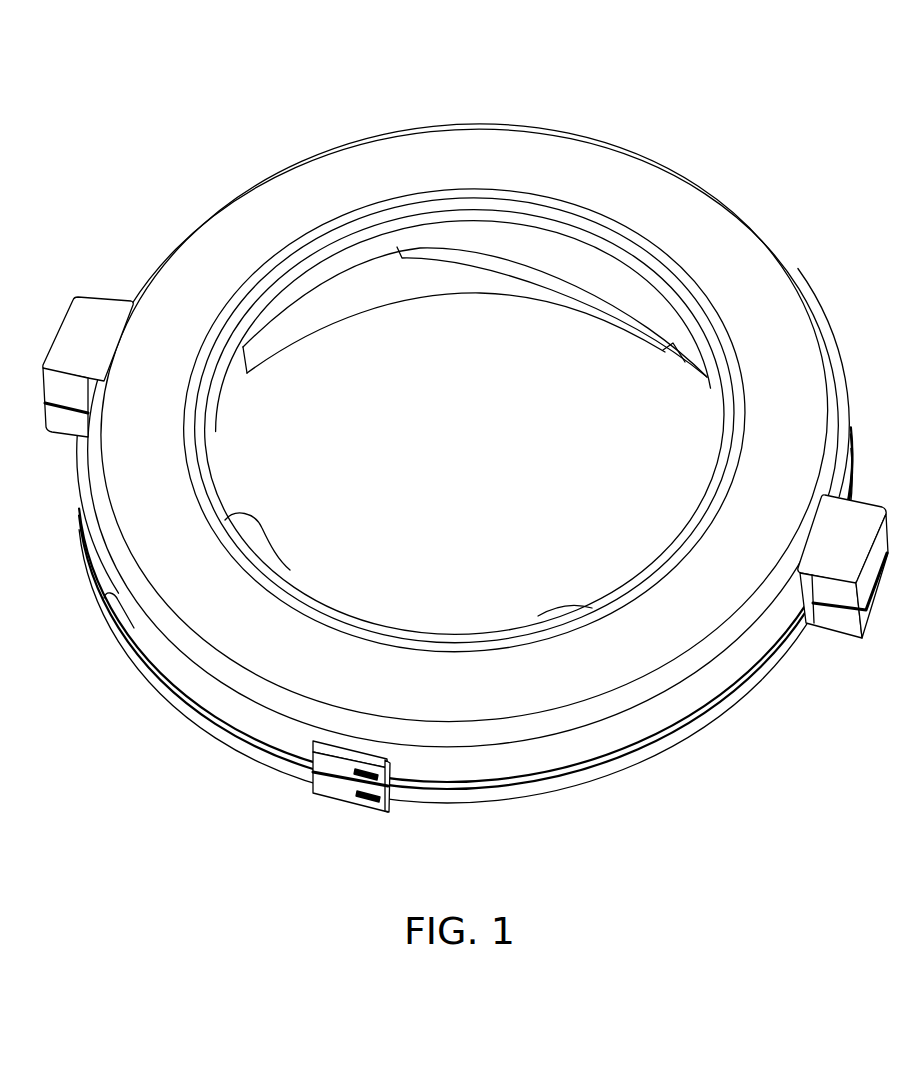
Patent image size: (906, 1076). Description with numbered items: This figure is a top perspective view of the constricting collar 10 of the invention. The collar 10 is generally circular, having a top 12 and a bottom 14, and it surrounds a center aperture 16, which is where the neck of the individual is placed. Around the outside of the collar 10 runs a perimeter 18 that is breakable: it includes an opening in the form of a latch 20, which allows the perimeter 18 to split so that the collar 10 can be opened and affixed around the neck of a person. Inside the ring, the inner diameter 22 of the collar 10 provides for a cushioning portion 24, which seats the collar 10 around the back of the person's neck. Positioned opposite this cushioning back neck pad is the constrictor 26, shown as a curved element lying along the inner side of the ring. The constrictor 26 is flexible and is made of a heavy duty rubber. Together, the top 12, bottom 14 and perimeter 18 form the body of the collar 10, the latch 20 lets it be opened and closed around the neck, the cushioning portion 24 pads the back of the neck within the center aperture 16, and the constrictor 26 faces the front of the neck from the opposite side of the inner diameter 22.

The collar 10 is at (459, 437).
The top 12 is at (777, 302).
The bottom 14 is at (692, 737).
The center aperture 16 is at (462, 453).
The perimeter 18 is at (97, 535).
The latch 20 is at (333, 781).
The inner diameter 22 is at (640, 574).
The cushioning portion 24 is at (270, 570).
The constrictor 26 is at (572, 302).